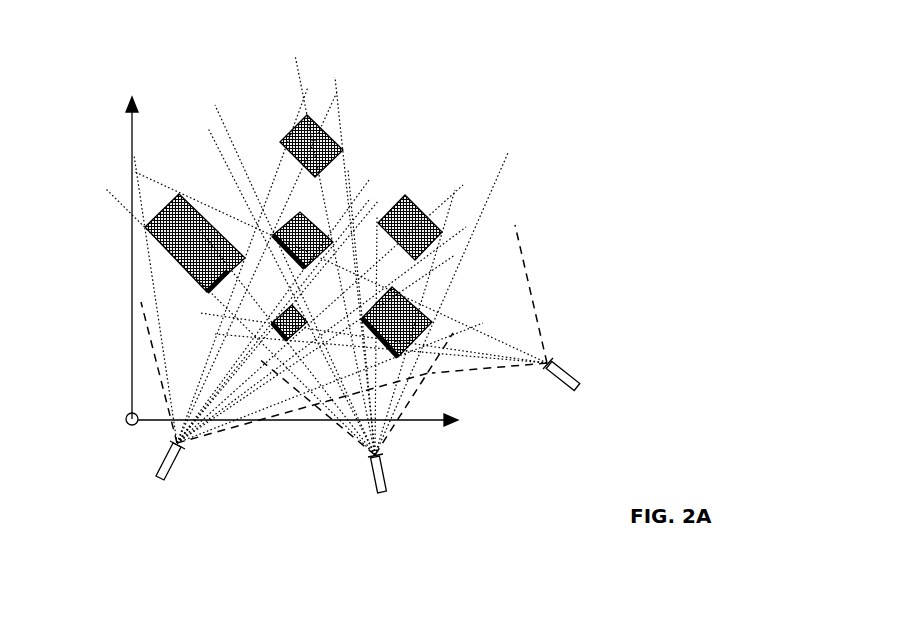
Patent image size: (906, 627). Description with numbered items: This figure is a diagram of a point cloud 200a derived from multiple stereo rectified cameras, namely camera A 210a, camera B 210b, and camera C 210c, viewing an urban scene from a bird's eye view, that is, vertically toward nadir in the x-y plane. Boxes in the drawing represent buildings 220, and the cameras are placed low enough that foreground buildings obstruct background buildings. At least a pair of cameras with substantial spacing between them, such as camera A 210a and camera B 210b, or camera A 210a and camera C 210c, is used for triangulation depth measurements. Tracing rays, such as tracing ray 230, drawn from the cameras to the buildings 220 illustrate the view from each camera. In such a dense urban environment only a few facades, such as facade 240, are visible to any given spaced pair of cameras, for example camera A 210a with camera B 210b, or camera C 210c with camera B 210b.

The point cloud 200a is at (413, 299).
The camera A 210a is at (239, 400).
The camera B 210b is at (378, 428).
The camera C 210c is at (559, 323).
The buildings 220 is at (418, 205).
The tracing ray 230 is at (520, 138).
The facade 240 is at (372, 347).